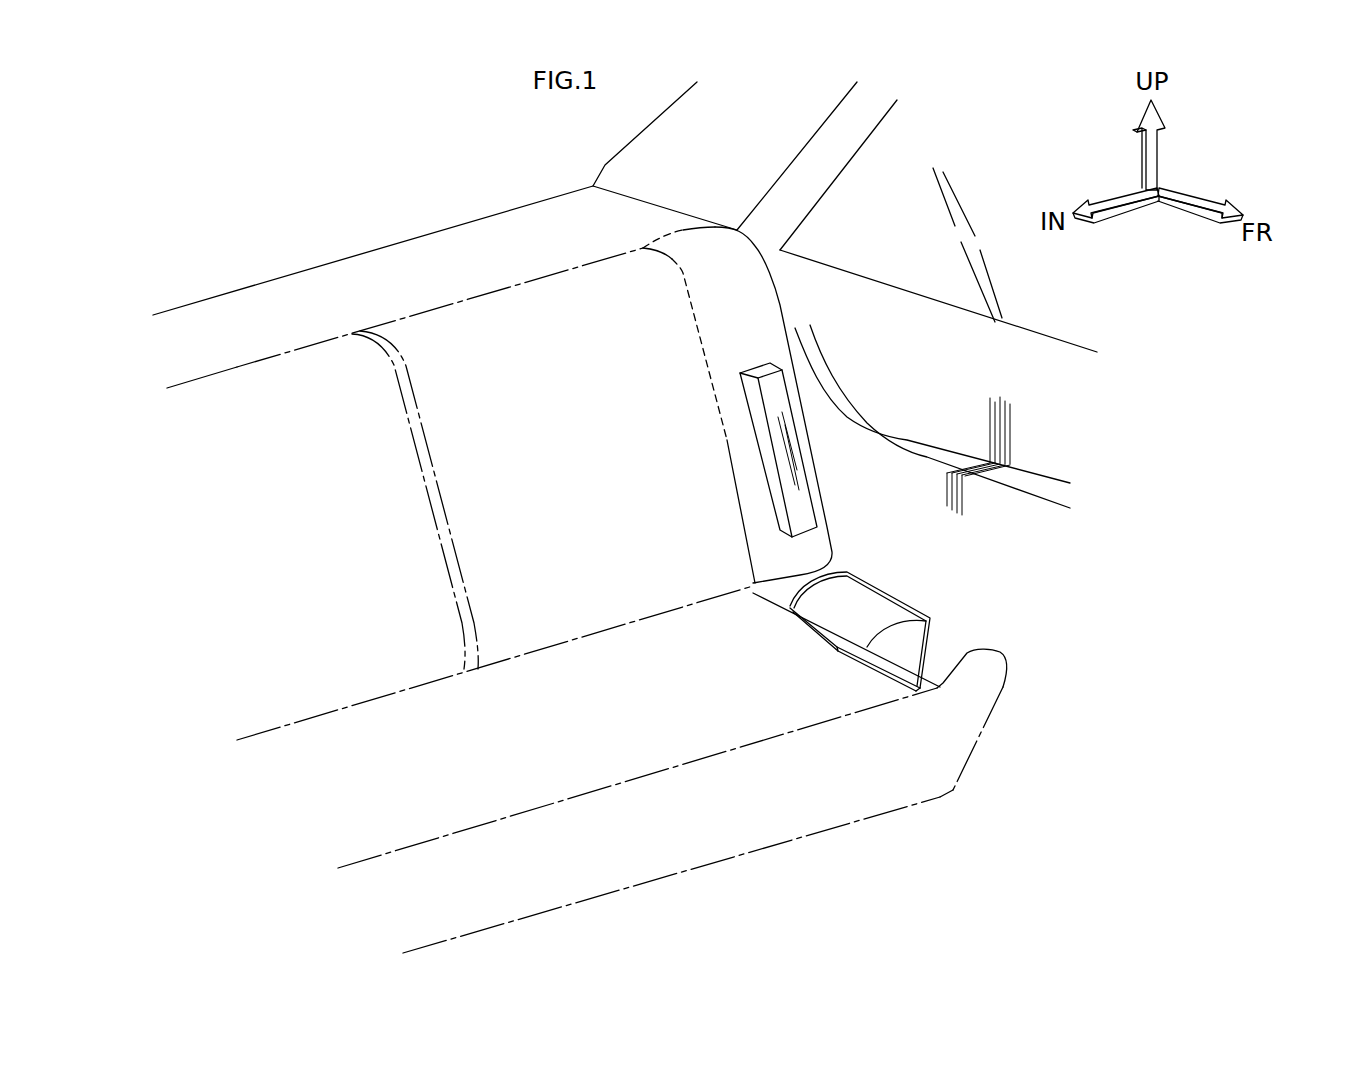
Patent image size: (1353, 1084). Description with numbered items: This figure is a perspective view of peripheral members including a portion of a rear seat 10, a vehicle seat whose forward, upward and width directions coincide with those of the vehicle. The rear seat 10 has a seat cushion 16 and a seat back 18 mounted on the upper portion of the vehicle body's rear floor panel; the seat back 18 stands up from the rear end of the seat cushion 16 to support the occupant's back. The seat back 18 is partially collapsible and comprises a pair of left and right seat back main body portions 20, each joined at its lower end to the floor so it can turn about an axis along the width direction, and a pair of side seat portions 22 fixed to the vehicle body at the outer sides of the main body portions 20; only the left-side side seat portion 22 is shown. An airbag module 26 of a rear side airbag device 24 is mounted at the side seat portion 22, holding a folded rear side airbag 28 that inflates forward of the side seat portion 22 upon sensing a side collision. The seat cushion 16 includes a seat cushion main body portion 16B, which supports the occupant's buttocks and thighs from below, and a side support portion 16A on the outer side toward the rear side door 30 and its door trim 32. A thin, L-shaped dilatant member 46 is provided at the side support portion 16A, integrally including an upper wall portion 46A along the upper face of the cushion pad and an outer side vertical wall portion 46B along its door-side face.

The rear seat 10 is at (372, 292).
The seat cushion 16 is at (655, 642).
The side support portion 16A is at (977, 638).
The seat cushion main body portion 16B is at (560, 675).
The seat back 18 is at (779, 306).
The seat back main body portions 20 is at (237, 367).
The side seat portions 22 is at (682, 232).
The rear side airbag device 24 is at (701, 450).
The airbag module 26 is at (701, 450).
The rear side airbag 28 is at (760, 472).
The rear side door 30 is at (1074, 344).
The door trim 32 is at (1028, 356).
The dilatant member 46 is at (860, 625).
The upper wall portion 46A is at (838, 620).
The outer side vertical wall portion 46B is at (933, 647).